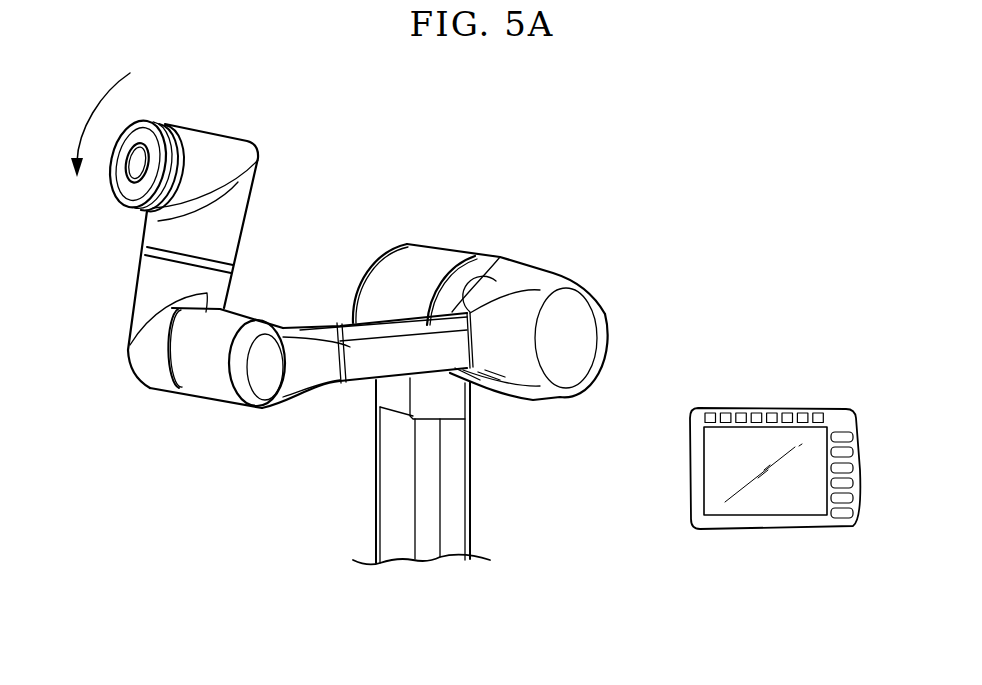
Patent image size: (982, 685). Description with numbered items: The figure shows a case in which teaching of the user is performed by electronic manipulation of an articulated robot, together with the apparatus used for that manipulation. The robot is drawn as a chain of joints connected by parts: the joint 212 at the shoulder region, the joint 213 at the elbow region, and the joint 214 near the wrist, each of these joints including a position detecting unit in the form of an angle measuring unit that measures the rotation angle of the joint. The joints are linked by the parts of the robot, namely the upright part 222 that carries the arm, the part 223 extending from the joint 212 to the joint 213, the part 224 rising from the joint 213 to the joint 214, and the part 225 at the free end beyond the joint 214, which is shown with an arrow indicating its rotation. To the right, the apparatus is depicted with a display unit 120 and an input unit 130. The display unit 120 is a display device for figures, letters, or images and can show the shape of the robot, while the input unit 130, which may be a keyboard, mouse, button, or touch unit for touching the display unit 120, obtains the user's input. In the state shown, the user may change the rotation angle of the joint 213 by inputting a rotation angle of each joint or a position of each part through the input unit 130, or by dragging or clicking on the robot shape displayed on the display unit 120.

The display unit 120 is at (758, 437).
The input unit 130 is at (837, 518).
The joint 212 is at (447, 268).
The joint 213 is at (172, 372).
The joint 214 is at (157, 249).
The part 222 is at (455, 480).
The part 223 is at (354, 362).
The part 224 is at (144, 310).
The part 225 is at (227, 237).